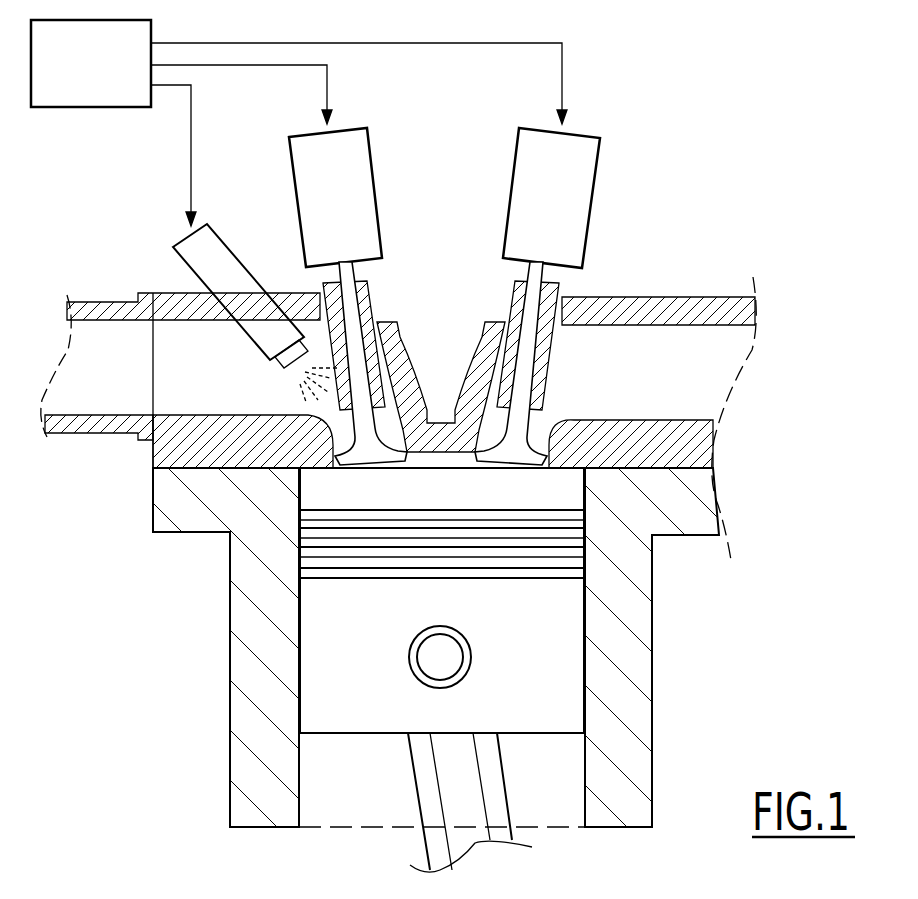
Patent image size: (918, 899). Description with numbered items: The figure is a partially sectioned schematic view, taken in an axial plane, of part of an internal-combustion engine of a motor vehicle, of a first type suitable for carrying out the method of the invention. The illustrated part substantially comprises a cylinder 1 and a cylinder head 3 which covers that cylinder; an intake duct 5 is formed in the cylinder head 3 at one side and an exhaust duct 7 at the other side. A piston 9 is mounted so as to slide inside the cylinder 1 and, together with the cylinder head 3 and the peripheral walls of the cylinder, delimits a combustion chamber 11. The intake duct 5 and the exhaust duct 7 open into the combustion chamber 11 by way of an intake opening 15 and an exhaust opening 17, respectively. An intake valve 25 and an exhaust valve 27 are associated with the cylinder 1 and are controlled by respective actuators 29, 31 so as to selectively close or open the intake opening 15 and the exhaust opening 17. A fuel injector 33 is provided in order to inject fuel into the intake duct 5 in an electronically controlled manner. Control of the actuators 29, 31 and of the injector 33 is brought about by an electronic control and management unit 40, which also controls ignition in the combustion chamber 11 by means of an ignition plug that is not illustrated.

The cylinder 1 is at (190, 697).
The cylinder head 3 is at (693, 442).
The intake duct 5 is at (185, 382).
The exhaust duct 7 is at (703, 367).
The piston 9 is at (537, 668).
The combustion chamber 11 is at (434, 506).
The intake opening 15 is at (375, 463).
The exhaust opening 17 is at (505, 463).
The intake valve 25 is at (376, 300).
The exhaust valve 27 is at (508, 300).
The actuator 29 is at (323, 210).
The actuator 31 is at (543, 210).
The fuel injector 33 is at (233, 286).
The electronic control and management unit 40 is at (102, 74).